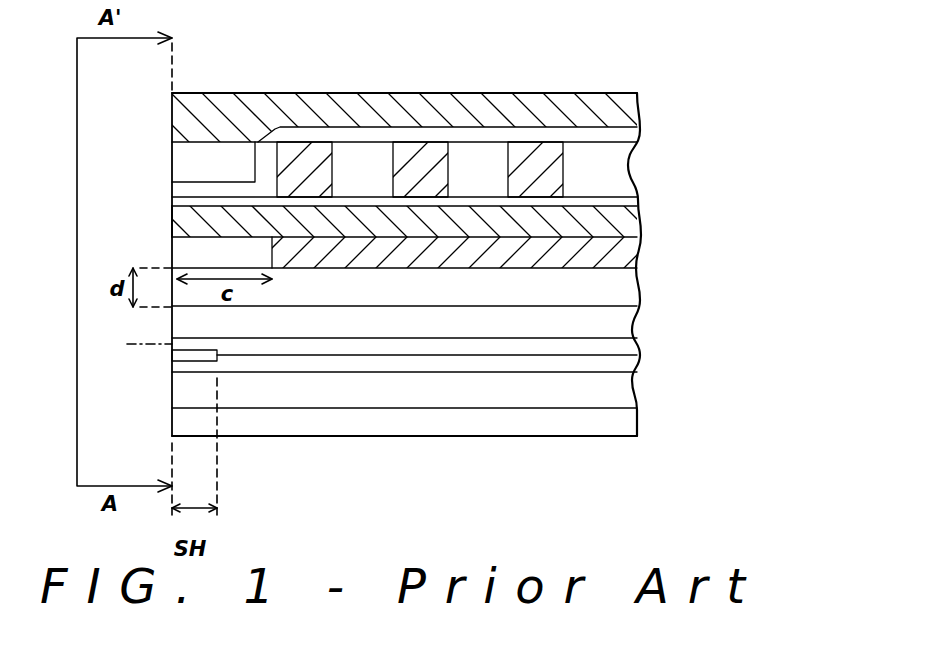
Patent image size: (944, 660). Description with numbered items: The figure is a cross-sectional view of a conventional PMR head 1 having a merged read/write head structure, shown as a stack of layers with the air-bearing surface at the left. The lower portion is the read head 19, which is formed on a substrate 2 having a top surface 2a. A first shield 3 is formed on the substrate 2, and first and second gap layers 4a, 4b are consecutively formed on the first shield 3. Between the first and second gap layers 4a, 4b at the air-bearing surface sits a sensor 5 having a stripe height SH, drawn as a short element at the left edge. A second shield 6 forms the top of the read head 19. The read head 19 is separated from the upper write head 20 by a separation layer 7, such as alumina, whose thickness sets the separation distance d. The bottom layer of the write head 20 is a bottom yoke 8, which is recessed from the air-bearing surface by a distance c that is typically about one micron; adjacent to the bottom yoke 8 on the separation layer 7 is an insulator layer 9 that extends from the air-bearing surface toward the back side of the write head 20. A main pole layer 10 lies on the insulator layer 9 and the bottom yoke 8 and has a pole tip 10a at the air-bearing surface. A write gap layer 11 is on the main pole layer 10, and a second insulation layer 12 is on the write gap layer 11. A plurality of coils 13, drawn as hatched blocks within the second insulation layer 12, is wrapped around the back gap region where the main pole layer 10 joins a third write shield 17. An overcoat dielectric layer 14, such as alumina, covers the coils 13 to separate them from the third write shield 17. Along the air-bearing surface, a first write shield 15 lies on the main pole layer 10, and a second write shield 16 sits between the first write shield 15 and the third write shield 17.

The PMR head 1 is at (666, 104).
The substrate 2 is at (628, 421).
The top surface 2a is at (377, 403).
The first shield 3 is at (628, 386).
The first gap layer 4a is at (630, 365).
The second gap layer 4b is at (630, 342).
The sensor 5 is at (182, 358).
The second shield 6 is at (620, 318).
The separation layer 7 is at (630, 286).
The bottom yoke 8 is at (623, 253).
The insulator layer 9 is at (207, 248).
The main pole layer 10 is at (620, 223).
The pole tip 10a is at (170, 223).
The write gap layer 11 is at (613, 200).
The second insulation layer 12 is at (263, 157).
The coils 13 is at (308, 158).
The overcoat dielectric layer 14 is at (614, 133).
The first write shield 15 is at (180, 192).
The second write shield 16 is at (180, 155).
The third write shield 17 is at (572, 110).
The read head 19 is at (694, 305).
The write head 20 is at (698, 95).